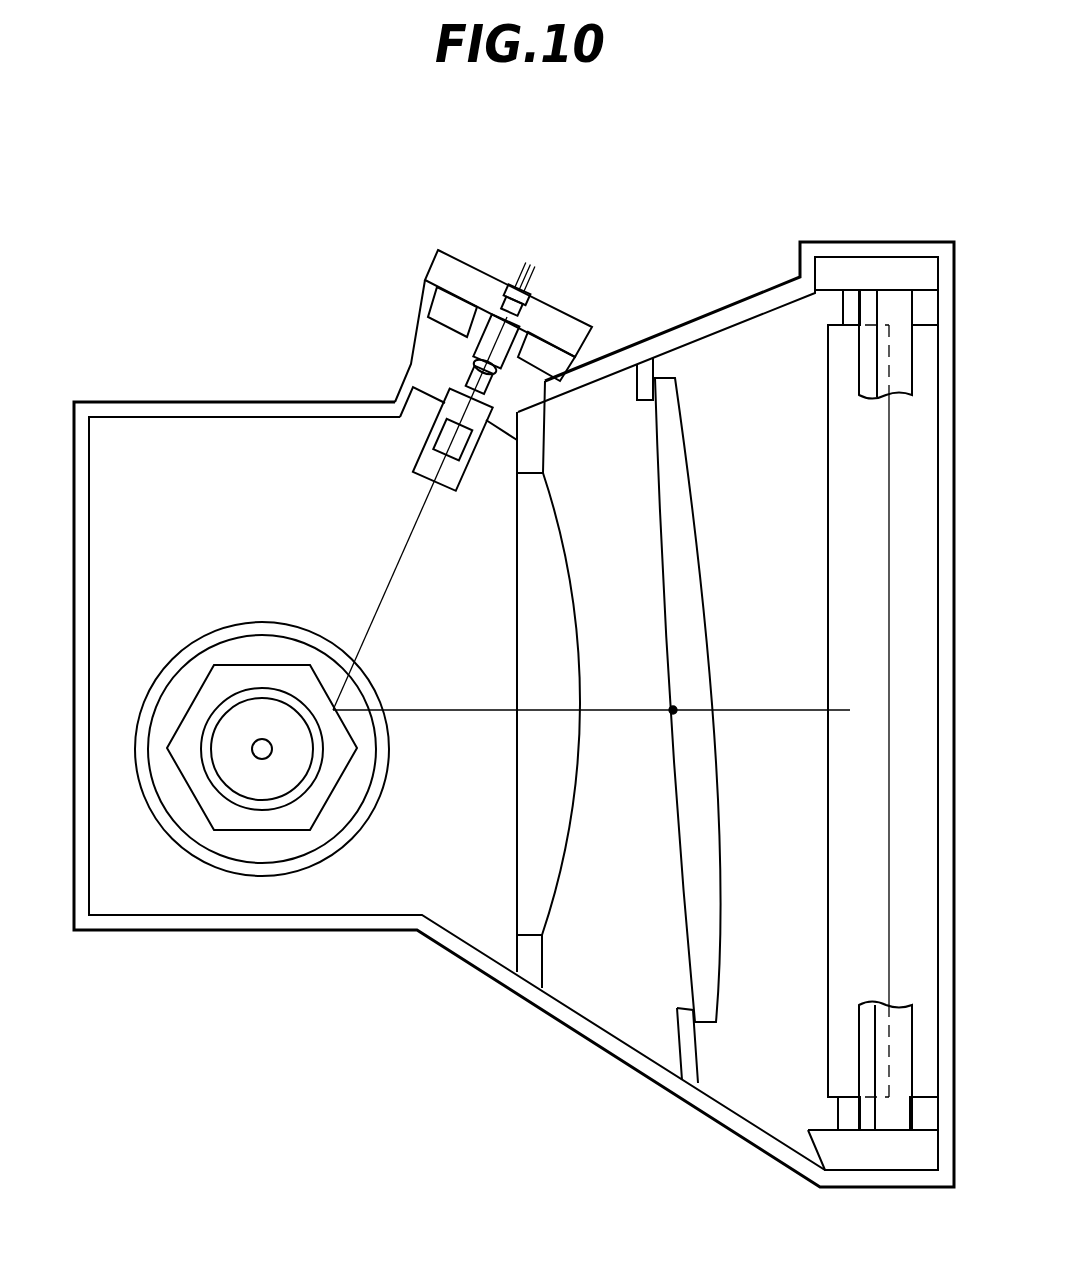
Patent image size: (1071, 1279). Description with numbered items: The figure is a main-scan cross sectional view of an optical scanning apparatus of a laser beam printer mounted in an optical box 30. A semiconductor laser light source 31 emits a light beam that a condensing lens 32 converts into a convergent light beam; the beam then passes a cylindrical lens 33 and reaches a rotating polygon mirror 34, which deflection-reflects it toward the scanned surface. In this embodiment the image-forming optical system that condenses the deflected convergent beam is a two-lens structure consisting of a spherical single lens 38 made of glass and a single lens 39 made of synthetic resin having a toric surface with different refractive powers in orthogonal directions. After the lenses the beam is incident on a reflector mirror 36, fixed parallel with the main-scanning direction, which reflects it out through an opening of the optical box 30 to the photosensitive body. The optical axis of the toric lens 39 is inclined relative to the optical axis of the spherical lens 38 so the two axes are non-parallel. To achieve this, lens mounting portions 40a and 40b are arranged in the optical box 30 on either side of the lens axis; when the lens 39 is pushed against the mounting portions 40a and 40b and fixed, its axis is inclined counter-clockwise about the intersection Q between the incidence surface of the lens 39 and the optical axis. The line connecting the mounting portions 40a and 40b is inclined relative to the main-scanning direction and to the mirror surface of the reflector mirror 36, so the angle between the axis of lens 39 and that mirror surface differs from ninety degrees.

The optical box 30 is at (237, 400).
The semiconductor laser light source 31 is at (530, 306).
The condensing lens 32 is at (470, 362).
The cylindrical lens 33 is at (423, 448).
The rotating polygon mirror 34 is at (330, 826).
The reflector mirror 36 is at (905, 290).
The spherical single lens 38 is at (537, 913).
The single lens with toric surface 39 is at (707, 991).
The lens mounting portion 40a is at (637, 397).
The lens mounting portion 40b is at (690, 1055).
The intersection Q is at (656, 735).